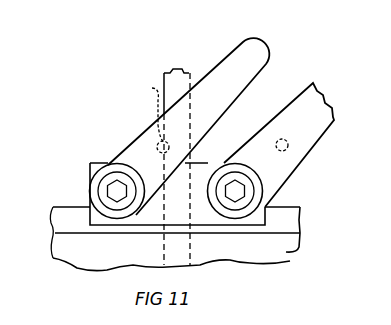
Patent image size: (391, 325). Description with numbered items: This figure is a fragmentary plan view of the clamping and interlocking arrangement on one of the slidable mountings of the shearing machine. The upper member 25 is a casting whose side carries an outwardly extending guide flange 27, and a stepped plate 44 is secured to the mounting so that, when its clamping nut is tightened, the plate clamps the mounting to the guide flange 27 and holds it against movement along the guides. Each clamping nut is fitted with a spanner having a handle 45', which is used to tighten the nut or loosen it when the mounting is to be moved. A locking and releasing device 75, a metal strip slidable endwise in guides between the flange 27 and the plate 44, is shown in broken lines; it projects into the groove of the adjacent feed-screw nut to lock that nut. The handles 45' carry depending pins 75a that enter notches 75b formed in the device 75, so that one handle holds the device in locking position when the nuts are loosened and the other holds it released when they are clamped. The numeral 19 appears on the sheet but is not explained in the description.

The sheet reference 19 is at (379, 57).
The upper member 25 is at (299, 251).
The guide flange 27 is at (293, 221).
The stepped plate 44 is at (207, 166).
The handle 45' is at (235, 125).
The locking and releasing device 75 is at (163, 72).
The pin 75a is at (364, 161).
The notch 75b is at (152, 88).